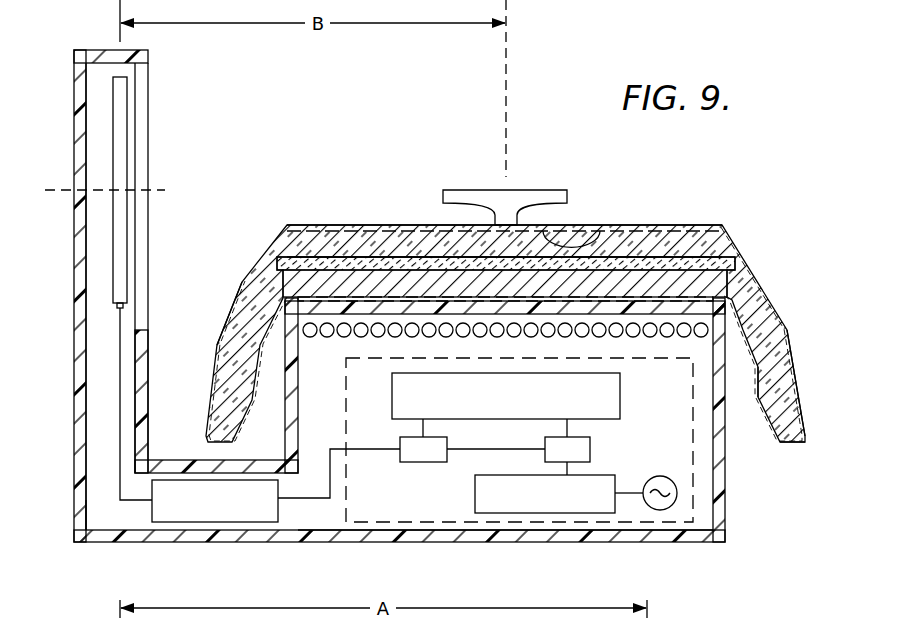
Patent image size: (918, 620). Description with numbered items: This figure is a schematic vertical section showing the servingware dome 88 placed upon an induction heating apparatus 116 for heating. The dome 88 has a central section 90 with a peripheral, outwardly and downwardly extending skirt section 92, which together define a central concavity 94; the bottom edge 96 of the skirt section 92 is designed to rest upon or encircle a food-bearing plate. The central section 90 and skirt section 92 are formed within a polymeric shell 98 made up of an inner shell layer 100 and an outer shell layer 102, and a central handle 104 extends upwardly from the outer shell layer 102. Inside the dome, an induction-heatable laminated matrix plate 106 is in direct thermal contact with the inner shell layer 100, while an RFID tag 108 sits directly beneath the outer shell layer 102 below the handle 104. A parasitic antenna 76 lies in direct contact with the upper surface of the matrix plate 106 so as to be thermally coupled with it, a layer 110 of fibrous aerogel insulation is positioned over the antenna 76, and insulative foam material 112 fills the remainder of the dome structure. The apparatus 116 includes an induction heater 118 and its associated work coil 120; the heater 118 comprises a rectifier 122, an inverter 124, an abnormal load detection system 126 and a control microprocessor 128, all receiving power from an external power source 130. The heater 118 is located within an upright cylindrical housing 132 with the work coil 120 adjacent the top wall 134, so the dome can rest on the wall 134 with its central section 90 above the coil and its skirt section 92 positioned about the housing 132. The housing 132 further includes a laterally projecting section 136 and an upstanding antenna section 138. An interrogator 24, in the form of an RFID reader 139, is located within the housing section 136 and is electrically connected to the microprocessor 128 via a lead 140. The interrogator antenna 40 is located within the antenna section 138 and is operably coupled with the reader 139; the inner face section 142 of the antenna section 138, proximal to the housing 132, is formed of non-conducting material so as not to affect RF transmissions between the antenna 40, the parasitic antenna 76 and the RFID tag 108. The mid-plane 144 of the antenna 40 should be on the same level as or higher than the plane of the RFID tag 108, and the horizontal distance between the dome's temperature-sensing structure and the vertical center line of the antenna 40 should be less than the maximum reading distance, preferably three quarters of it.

The interrogator 24 is at (147, 512).
The interrogator/RFID antenna 40 is at (118, 104).
The parasitic antenna 76 is at (633, 257).
The servingware dome 88 is at (232, 260).
The central section 90 is at (695, 210).
The skirt section 92 is at (228, 317).
The central concavity 94 is at (272, 403).
The bottom edge 96 is at (797, 440).
The polymeric shell 98 is at (748, 238).
The inner shell layer 100 is at (760, 410).
The outer shell layer 102 is at (797, 372).
The central handle 104 is at (517, 195).
The induction-heatable laminated matrix plate 106 is at (297, 287).
The RFID tag 108 is at (597, 222).
The layer of insulation 110 is at (735, 265).
The insulative material 112 is at (380, 240).
The apparatus 116 is at (737, 548).
The induction heater 118 is at (670, 523).
The work coil 120 is at (683, 334).
The rectifier 122 is at (475, 498).
The inverter 124 is at (620, 386).
The abnormal load detection system 126 is at (588, 447).
The control microprocessor 128 is at (423, 462).
The external power source 130 is at (655, 477).
The housing 132 is at (282, 390).
The top wall 134 is at (347, 314).
The laterally projecting section 136 is at (185, 465).
The upstanding antenna section 138 is at (78, 252).
The RFID reader 139 is at (279, 507).
The lead 140 is at (328, 467).
The inner face section 142 is at (143, 150).
The mid-plane 144 is at (165, 190).